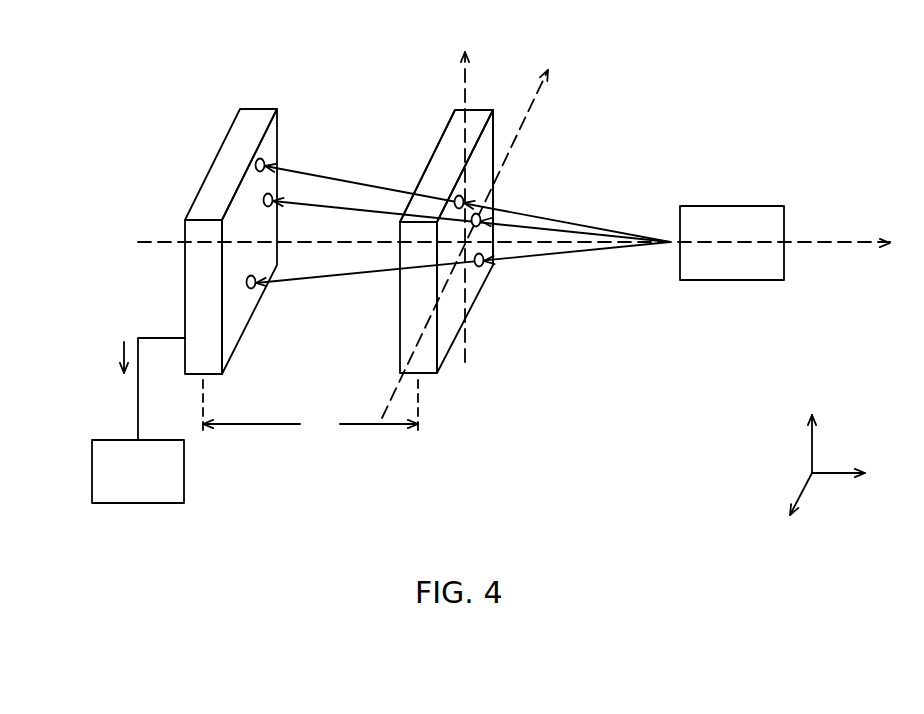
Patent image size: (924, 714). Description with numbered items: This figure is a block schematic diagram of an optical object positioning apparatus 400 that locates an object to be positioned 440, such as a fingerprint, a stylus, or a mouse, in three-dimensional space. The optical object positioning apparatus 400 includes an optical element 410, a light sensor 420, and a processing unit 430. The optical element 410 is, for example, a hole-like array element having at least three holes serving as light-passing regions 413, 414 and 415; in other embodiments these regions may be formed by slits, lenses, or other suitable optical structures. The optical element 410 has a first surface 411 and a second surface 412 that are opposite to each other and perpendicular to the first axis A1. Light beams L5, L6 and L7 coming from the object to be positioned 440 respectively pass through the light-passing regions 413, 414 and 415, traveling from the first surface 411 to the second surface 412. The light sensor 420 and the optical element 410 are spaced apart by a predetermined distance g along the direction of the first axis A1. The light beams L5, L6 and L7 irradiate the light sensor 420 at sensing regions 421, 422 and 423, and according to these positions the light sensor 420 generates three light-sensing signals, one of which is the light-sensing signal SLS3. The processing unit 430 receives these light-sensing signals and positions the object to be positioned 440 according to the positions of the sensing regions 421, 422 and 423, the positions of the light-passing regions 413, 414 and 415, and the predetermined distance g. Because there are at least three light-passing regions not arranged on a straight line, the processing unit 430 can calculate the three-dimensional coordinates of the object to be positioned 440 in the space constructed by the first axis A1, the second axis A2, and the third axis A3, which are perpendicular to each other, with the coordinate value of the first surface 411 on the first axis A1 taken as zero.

The optical object positioning apparatus 400 is at (492, 279).
The optical element 410 is at (448, 220).
The first surface 411 is at (490, 140).
The second surface 412 is at (445, 132).
The light-passing region 413 is at (481, 222).
The light-passing region 414 is at (482, 268).
The light-passing region 415 is at (455, 196).
The light sensor 420 is at (258, 108).
The sensing region 421 is at (270, 206).
The sensing region 422 is at (252, 289).
The sensing region 423 is at (255, 165).
The processing unit 430 is at (184, 482).
The object to be positioned 440 is at (715, 206).
The light beam L5 is at (323, 208).
The light beam L6 is at (325, 277).
The light beam L7 is at (335, 178).
The first axis A1 is at (531, 244).
The second axis A2 is at (477, 227).
The third axis A3 is at (468, 191).
The predetermined distance g is at (310, 408).
The light-sensing signal SLS3 is at (94, 379).